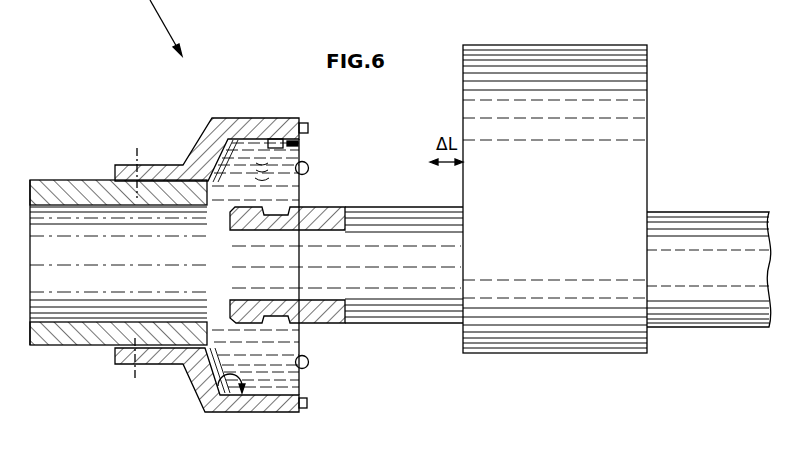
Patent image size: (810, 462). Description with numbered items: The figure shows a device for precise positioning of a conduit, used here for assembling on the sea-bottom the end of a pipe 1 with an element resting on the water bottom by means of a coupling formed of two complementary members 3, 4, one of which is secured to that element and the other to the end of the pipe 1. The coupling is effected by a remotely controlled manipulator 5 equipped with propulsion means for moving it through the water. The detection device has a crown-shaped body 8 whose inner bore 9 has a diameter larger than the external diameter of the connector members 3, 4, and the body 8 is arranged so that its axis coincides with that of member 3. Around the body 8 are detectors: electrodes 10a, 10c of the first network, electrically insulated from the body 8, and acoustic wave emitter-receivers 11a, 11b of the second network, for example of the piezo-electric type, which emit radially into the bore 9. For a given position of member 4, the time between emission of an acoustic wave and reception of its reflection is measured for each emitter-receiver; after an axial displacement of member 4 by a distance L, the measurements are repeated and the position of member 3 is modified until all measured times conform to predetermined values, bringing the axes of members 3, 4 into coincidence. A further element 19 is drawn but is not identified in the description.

The pipe 1 is at (687, 211).
The connector member 3 is at (87, 334).
The connector member 4 is at (415, 322).
The remotely controlled manipulator 5 is at (648, 130).
The body 8 is at (180, 164).
The inner bore 9 is at (203, 384).
The electrode 10a is at (309, 128).
The electrode 10c is at (307, 405).
The acoustic wave emitter-receiver 11a is at (309, 170).
The acoustic wave emitter-receiver 11b is at (309, 362).
The latch block 19 is at (299, 144).